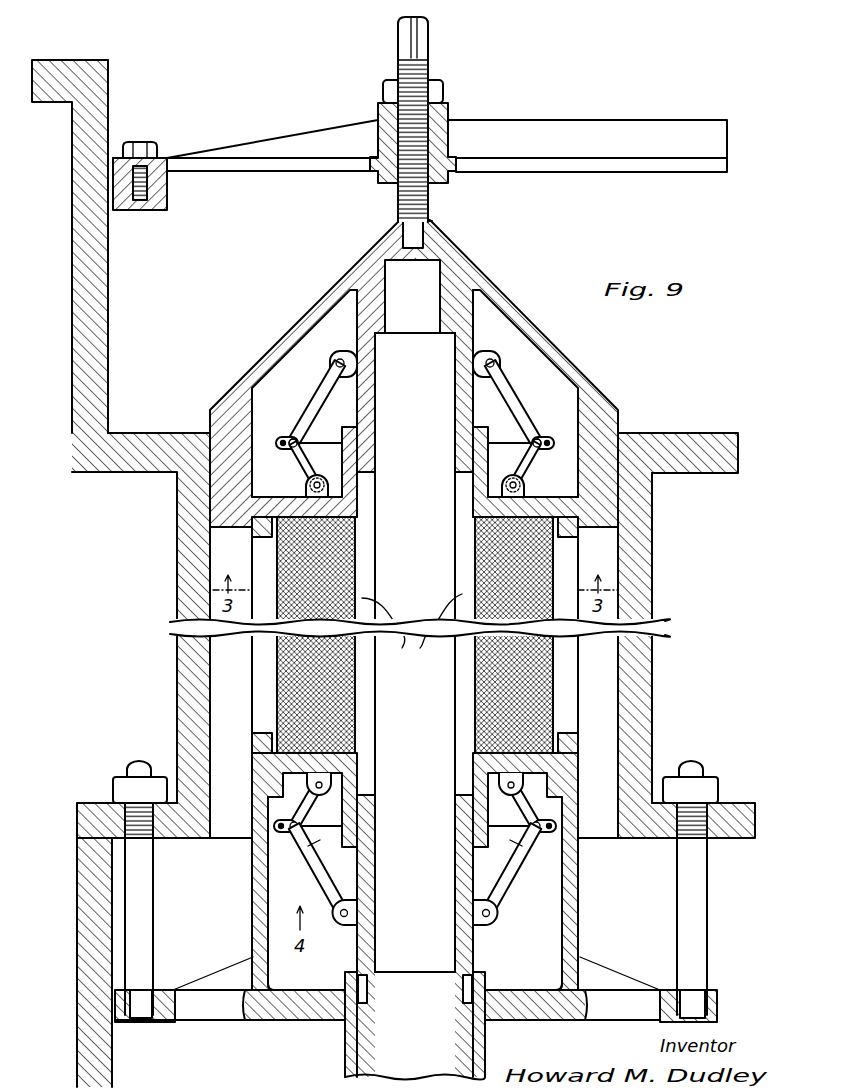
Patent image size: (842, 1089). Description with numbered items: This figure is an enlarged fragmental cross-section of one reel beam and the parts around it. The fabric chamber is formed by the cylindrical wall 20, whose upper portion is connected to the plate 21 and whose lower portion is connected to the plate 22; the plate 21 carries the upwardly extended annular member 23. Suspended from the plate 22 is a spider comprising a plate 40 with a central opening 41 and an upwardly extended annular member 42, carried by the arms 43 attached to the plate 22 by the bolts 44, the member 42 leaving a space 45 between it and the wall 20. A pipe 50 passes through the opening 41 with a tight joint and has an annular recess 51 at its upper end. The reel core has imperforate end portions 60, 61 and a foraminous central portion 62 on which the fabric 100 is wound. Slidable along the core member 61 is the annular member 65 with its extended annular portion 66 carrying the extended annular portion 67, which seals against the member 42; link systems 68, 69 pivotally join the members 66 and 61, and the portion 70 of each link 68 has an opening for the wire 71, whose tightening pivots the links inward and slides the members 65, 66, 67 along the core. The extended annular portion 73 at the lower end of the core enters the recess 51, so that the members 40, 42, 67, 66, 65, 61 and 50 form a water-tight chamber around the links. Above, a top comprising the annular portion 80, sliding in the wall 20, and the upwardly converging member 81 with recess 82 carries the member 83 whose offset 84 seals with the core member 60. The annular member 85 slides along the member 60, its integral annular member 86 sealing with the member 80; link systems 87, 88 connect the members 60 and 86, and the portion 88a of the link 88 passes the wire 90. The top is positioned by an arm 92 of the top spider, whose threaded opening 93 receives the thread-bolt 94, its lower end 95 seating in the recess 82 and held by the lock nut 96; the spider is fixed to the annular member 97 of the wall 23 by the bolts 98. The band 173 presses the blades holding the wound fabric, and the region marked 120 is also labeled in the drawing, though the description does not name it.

The cylindrical wall 20 is at (176, 636).
The plate 21 is at (692, 433).
The plate 22 is at (77, 912).
The annular member 23 is at (110, 338).
The plate 40 is at (298, 1021).
The central opening 41 is at (338, 991).
The annular member 42 is at (270, 891).
The arm 43 is at (165, 1014).
The bolt 44 is at (150, 903).
The space 45 is at (223, 757).
The pipe 50 is at (350, 1057).
The annular recess 51 is at (364, 976).
The core end portion 60 is at (372, 378).
The core member 61 is at (373, 841).
The foraminous portion 62 is at (462, 656).
The annular member 65 is at (352, 784).
The extended annular portion 66 is at (253, 748).
The extended annular portion 67 is at (263, 788).
The link 68 is at (314, 795).
The link 69 is at (346, 892).
The portion of link 70 is at (284, 818).
The wire 71 is at (410, 869).
The extended annular portion 73 is at (478, 980).
The annular portion 80 is at (222, 480).
The upwardly converging member 81 is at (312, 314).
The recess 82 is at (436, 233).
The member 83 is at (373, 294).
The offset 84 is at (376, 338).
The annular member 85 is at (373, 448).
The annular member 86 is at (275, 496).
The link 87 is at (318, 399).
The link 88 is at (312, 462).
The portion of member 88a is at (396, 455).
The wire 90 is at (281, 437).
The arm 92 is at (594, 173).
The threaded opening 93 is at (400, 118).
The thread-bolt 94 is at (405, 182).
The lower end 95 is at (407, 231).
The lock nut 96 is at (438, 91).
The annular member 97 is at (166, 210).
The bolt 98 is at (140, 142).
The fabric 100 is at (478, 567).
The chamber wall 120 is at (258, 687).
The band 173 is at (257, 537).